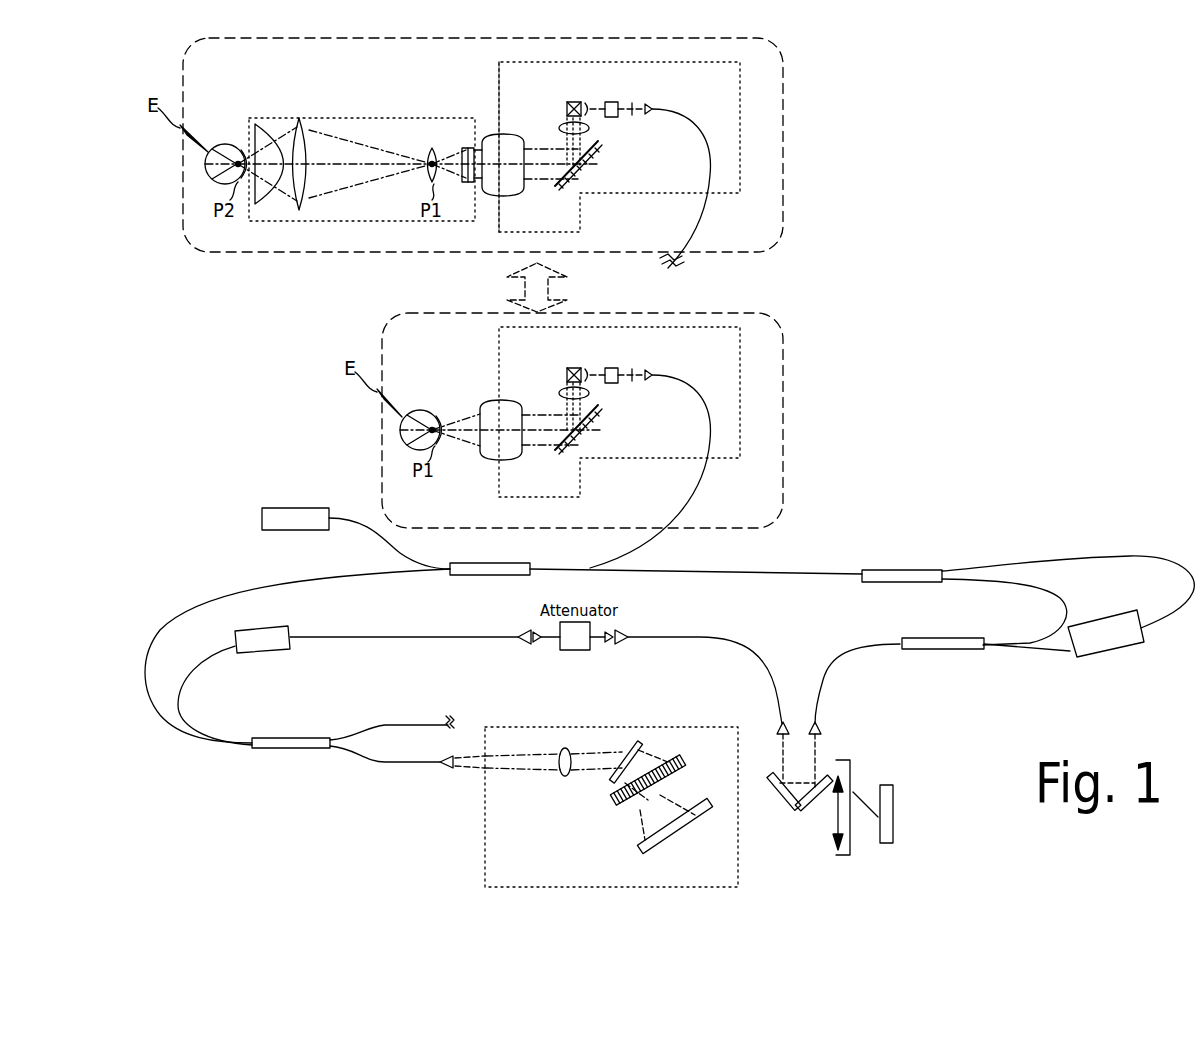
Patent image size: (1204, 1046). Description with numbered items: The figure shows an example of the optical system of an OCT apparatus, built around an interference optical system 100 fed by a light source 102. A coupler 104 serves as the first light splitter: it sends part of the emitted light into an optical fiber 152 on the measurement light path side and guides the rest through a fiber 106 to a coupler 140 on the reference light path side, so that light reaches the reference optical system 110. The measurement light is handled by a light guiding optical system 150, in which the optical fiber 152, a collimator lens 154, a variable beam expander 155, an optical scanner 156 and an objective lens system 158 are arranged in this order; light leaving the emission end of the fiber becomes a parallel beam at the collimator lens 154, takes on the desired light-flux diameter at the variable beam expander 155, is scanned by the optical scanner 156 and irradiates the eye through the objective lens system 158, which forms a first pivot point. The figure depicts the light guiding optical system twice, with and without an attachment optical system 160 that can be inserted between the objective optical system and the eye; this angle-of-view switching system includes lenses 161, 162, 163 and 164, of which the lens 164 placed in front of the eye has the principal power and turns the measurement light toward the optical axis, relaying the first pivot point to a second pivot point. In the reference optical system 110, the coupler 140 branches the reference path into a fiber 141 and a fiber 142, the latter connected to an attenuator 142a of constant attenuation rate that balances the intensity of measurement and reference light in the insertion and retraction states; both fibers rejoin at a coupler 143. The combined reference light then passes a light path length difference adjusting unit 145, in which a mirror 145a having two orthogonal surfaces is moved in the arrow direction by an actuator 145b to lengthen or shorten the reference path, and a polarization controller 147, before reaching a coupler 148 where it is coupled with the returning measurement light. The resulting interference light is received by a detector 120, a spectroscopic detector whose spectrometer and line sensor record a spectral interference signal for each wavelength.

The interference optical system 100 is at (948, 333).
The light source 102 is at (262, 518).
The coupler 104 is at (462, 574).
The fiber 106 is at (796, 566).
The reference optical system 110 is at (1062, 520).
The detector 120 is at (484, 828).
The coupler 140 is at (864, 570).
The fiber 141 is at (1021, 582).
The fiber 142 is at (1118, 565).
The attenuator 142a is at (1076, 658).
The coupler 143 is at (928, 638).
The light path length difference adjusting unit 145 is at (862, 765).
The mirror 145a is at (792, 808).
The actuator 145b is at (895, 810).
The polarization controller 147 is at (290, 632).
The coupler 148 is at (292, 748).
The light guiding optical system 150 is at (778, 97).
The optical fiber 152 is at (703, 222).
The collimator lens 154 is at (632, 116).
The variable beam expander 155 is at (611, 102).
The optical scanner 156 is at (575, 102).
The objective lens system 158 is at (548, 195).
The attachment optical system 160 is at (349, 117).
The lens 161 is at (465, 146).
The lens 162 is at (428, 146).
The lens 163 is at (297, 118).
The lens 164 is at (256, 125).